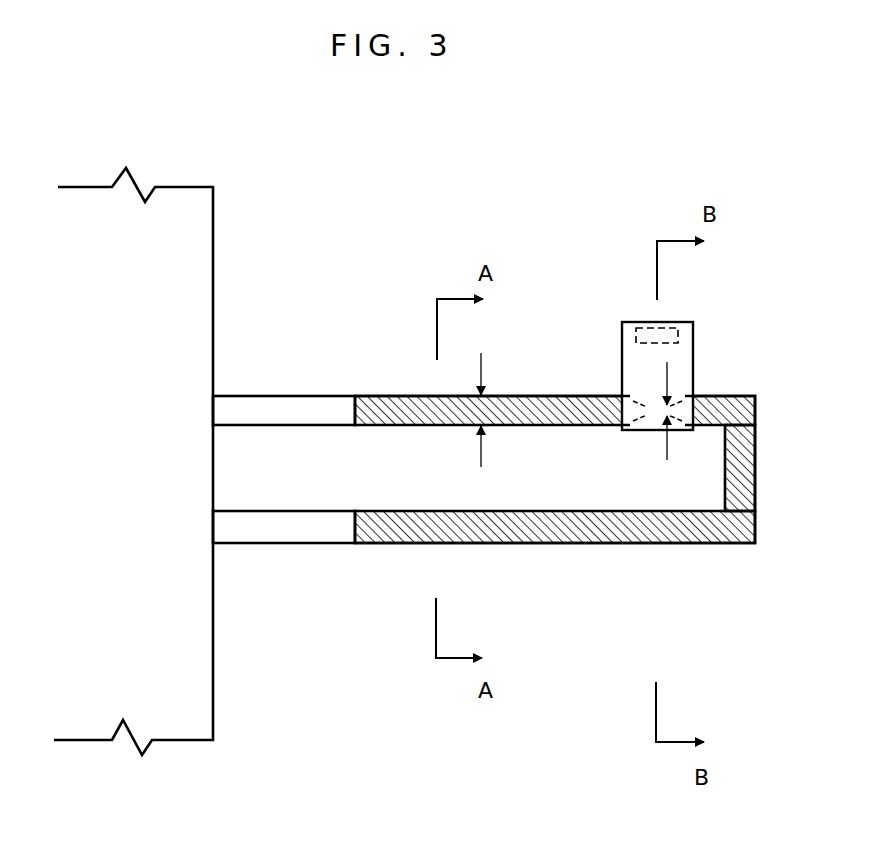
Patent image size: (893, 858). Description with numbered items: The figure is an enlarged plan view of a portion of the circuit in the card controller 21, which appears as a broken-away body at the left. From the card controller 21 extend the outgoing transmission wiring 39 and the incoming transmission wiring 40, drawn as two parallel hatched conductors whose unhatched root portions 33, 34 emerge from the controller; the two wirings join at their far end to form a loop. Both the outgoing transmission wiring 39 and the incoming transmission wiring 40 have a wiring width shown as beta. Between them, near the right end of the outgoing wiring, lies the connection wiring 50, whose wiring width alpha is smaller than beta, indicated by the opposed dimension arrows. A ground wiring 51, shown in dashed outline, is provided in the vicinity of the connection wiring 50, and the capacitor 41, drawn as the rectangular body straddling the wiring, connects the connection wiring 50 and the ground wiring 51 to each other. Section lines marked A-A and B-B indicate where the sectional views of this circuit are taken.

The card controller 21 is at (175, 217).
The upper arm portion 33 is at (266, 408).
The lower arm portion 34 is at (258, 525).
The outgoing transmission wiring 39 is at (537, 397).
The incoming transmission wiring 40 is at (530, 545).
The capacitor 41 is at (693, 365).
The connection wiring 50 is at (655, 410).
The ground wiring 51 is at (668, 325).